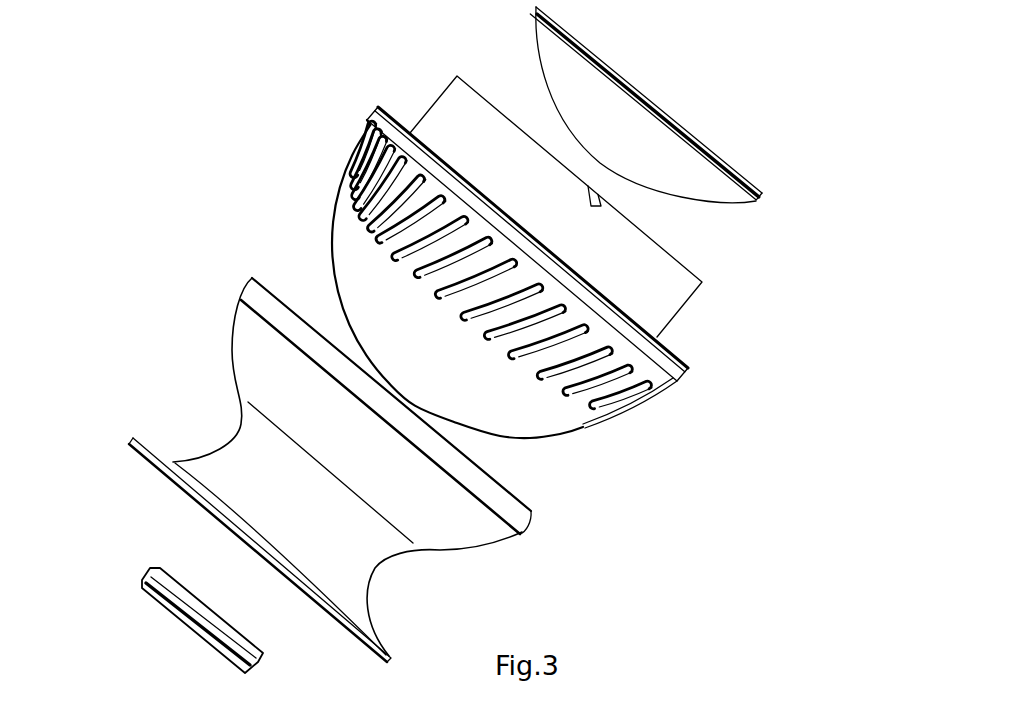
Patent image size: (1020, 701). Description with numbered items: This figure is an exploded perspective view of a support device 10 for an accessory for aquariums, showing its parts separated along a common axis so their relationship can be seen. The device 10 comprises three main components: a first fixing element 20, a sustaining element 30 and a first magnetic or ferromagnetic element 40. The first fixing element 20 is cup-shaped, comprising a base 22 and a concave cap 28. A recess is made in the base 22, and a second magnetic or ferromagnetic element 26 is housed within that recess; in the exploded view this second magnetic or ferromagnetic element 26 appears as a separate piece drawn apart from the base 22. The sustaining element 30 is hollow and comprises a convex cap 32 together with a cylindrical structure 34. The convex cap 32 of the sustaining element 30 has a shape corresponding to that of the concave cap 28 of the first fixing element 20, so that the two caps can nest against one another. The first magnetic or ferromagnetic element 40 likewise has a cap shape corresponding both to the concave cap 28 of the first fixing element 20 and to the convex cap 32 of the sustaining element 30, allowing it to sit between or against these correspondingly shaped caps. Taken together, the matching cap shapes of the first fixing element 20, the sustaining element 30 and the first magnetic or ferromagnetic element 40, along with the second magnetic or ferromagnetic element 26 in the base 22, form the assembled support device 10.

The support device 10 is at (168, 122).
The first fixing element 20 is at (227, 376).
The base 22 is at (365, 606).
The second magnetic or ferromagnetic element 26 is at (259, 663).
The concave cap 28 is at (531, 511).
The sustaining element 30 is at (338, 196).
The convex cap 32 is at (644, 407).
The cylindrical structure 34 is at (680, 314).
The first magnetic or ferromagnetic element 40 is at (541, 69).